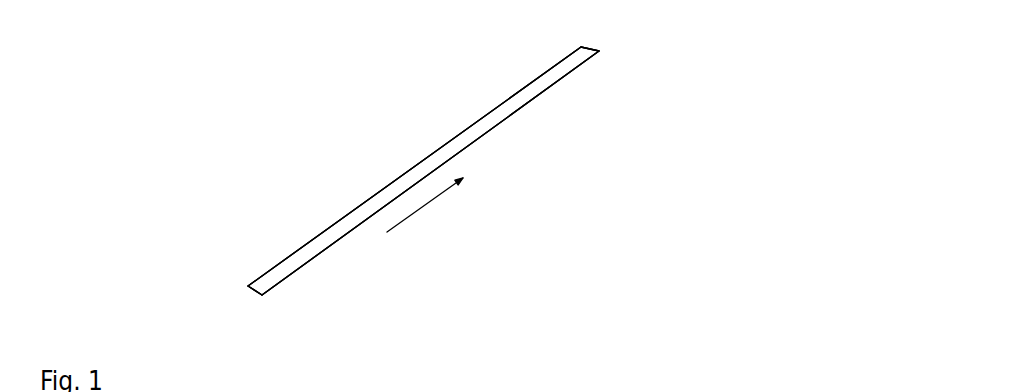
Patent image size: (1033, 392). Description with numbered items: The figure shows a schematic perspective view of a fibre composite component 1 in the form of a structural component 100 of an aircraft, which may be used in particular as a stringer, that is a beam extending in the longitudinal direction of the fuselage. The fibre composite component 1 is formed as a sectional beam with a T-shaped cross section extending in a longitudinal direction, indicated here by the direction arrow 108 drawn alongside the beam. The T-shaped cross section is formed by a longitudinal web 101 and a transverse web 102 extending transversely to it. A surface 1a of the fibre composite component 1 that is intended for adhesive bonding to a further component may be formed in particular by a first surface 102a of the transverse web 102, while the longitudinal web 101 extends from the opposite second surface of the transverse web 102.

The fibre composite component 1 is at (287, 130).
The structural component 100 is at (423, 171).
The surface 1a is at (281, 273).
The longitudinal web 101 is at (261, 296).
The transverse web 102 is at (492, 122).
The first surface 102a is at (572, 64).
The longitudinal direction 108 is at (423, 203).